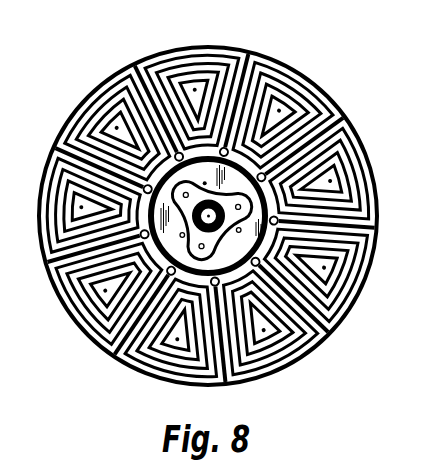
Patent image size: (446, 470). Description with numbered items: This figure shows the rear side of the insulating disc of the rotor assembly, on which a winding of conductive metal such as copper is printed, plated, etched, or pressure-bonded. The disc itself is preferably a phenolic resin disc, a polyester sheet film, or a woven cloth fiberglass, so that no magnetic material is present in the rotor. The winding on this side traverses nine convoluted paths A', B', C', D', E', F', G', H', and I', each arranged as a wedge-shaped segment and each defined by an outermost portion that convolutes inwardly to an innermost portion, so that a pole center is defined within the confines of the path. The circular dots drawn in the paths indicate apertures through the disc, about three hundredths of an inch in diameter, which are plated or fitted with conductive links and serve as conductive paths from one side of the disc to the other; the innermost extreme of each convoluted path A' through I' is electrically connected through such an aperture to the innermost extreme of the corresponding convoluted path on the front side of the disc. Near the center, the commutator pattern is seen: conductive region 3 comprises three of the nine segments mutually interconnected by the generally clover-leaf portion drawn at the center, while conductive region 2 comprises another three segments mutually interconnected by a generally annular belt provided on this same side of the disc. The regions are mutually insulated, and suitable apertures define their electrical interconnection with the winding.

The convoluted path A' is at (265, 121).
The convoluted path B' is at (191, 88).
The convoluted path C' is at (126, 137).
The convoluted path D' is at (79, 211).
The convoluted path E' is at (116, 284).
The convoluted path F' is at (186, 337).
The convoluted path G' is at (260, 323).
The convoluted path H' is at (311, 259).
The convoluted path I' is at (318, 181).
The conductive region 2 is at (208, 216).
The conductive region 3 is at (211, 220).